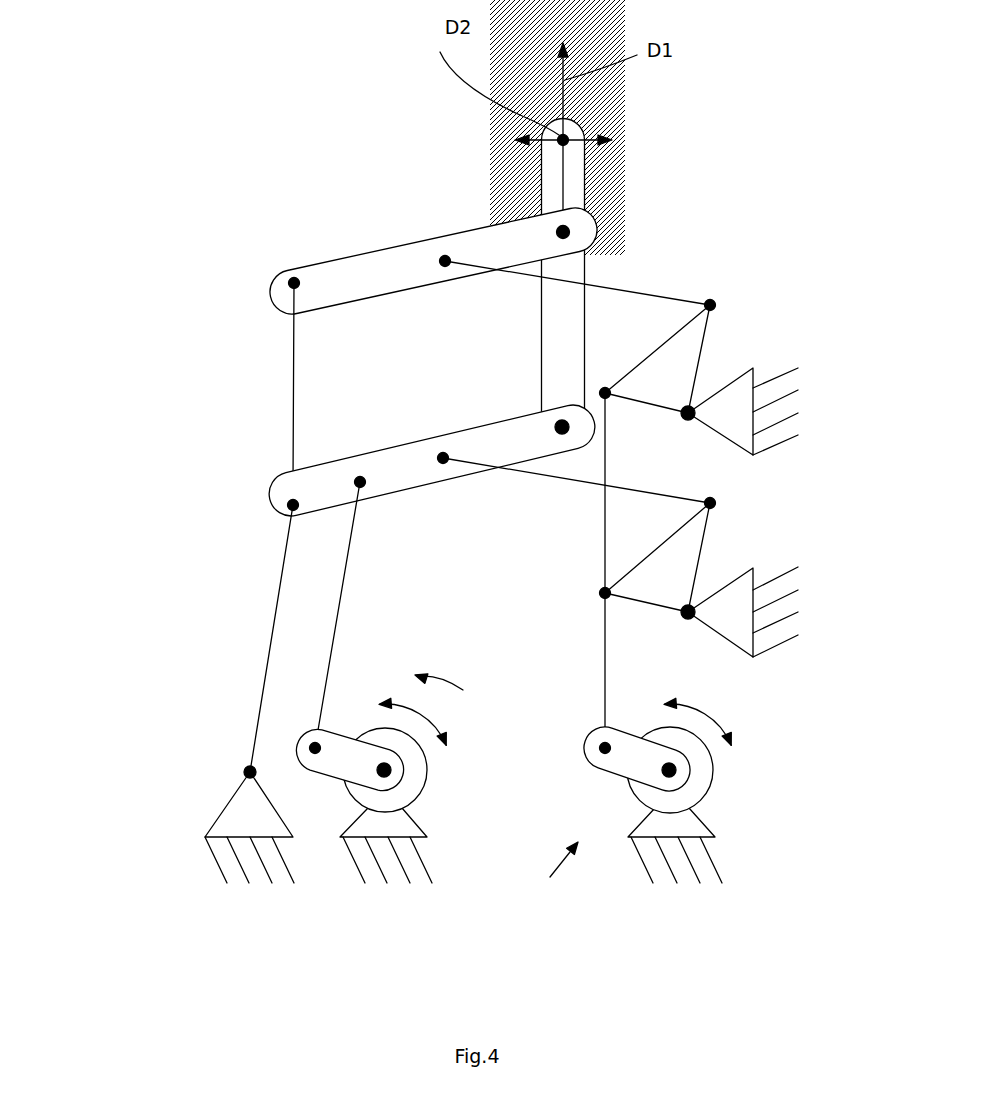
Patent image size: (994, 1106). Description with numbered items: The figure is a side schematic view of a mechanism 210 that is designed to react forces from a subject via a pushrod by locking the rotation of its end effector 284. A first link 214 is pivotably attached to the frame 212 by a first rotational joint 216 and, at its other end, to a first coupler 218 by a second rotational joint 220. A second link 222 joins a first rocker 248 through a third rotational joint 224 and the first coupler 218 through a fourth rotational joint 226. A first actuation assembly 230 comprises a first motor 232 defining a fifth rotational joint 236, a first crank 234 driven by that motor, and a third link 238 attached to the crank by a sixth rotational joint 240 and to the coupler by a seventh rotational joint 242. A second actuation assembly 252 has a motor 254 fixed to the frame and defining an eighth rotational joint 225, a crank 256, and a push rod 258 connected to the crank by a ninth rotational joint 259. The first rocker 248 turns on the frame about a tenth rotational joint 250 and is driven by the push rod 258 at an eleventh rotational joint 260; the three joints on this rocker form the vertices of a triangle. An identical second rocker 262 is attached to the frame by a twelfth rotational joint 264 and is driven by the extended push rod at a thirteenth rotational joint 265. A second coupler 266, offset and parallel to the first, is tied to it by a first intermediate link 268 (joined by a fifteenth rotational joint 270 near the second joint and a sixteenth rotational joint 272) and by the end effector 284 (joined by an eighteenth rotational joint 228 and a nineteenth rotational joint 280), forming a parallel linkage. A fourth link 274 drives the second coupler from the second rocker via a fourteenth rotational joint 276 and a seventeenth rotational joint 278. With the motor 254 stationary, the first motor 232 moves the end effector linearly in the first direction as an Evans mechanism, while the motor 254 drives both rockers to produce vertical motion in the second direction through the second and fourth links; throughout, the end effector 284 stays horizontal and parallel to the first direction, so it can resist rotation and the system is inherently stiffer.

The mechanism 210 is at (222, 78).
The frame 212 is at (228, 860).
The first link 214 is at (272, 630).
The first rotational joint 216 is at (250, 772).
The first coupler 218 is at (400, 480).
The second rotational joint 220 is at (283, 512).
The second link 222 is at (545, 480).
The third rotational joint 224 is at (713, 503).
The eighth rotational joint 225 is at (675, 773).
The fourth rotational joint 226 is at (443, 456).
The eighteenth rotational joint 228 is at (558, 422).
The actuation assembly 230 is at (432, 721).
The first motor 232 is at (420, 782).
The first crank 234 is at (353, 763).
The fifth rotational joint 236 is at (392, 772).
The third link 238 is at (416, 670).
The sixth rotational joint 240 is at (317, 615).
The seventh rotational joint 242 is at (360, 482).
The first rocker 248 is at (698, 565).
The tenth rotational joint 250 is at (700, 617).
The second actuation assembly 252 is at (553, 875).
The motor 254 is at (717, 770).
The crank 256 is at (622, 775).
The push rod 258 is at (603, 682).
The ninth rotational joint 259 is at (600, 747).
The eleventh rotational joint 260 is at (605, 593).
The second rocker 262 is at (690, 348).
The twelfth rotational joint 264 is at (688, 415).
The thirteenth rotational joint 265 is at (605, 393).
The second coupler 266 is at (378, 275).
The first intermediate link 268 is at (294, 402).
The fifteenth rotational joint 270 is at (290, 483).
The sixteenth rotational joint 272 is at (288, 283).
The fourth link 274 is at (652, 293).
The fourteenth rotational joint 276 is at (712, 302).
The seventeenth rotational joint 278 is at (445, 260).
The nineteenth rotational joint 280 is at (560, 232).
The end effector 284 is at (542, 321).